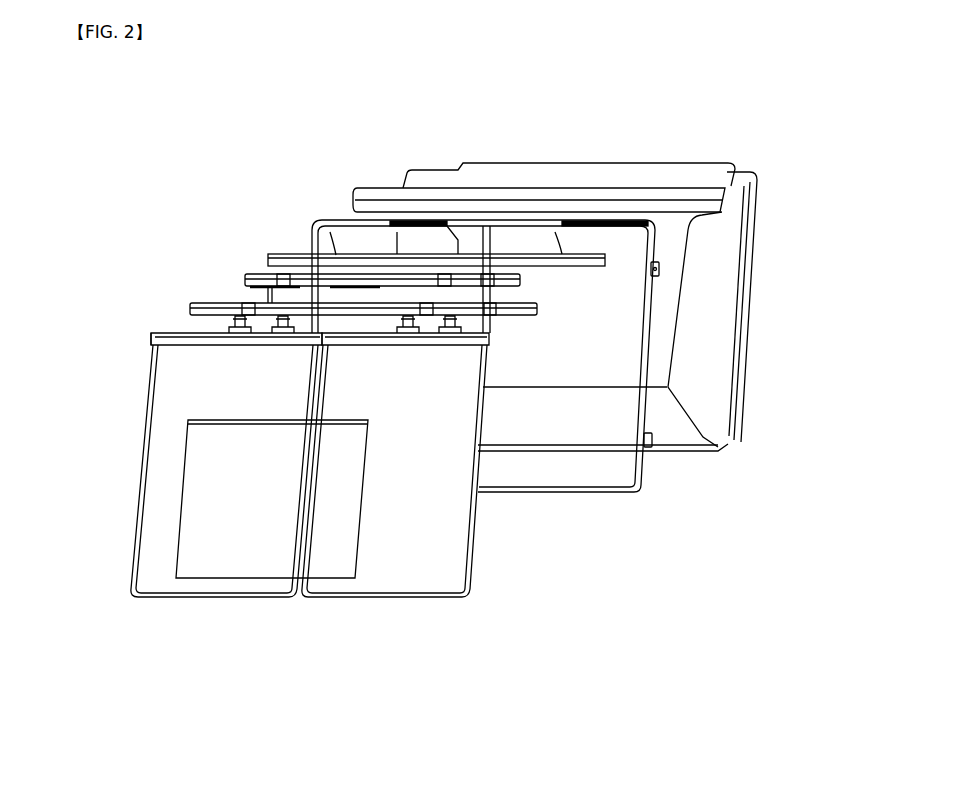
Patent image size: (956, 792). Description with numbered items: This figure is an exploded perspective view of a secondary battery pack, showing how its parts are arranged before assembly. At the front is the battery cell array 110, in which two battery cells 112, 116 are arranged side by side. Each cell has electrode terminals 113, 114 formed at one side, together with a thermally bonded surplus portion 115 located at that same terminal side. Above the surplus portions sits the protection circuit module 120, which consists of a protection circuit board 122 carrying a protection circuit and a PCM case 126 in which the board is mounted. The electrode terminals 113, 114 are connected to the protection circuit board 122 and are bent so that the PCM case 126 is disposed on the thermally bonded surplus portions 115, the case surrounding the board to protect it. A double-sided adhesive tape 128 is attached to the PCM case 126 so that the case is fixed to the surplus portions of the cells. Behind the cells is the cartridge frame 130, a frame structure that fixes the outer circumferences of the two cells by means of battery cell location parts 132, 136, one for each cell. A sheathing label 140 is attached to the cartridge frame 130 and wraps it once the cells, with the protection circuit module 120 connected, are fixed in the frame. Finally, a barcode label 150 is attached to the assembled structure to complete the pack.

The battery cell array 110 is at (277, 528).
The battery cell 112 is at (193, 502).
The electrode terminal 113 is at (238, 322).
The electrode terminal 114 is at (270, 308).
The thermally bonded surplus portion 115 is at (160, 340).
The battery cell 116 is at (347, 584).
The protection circuit module 120 is at (301, 229).
The protection circuit board 122 is at (328, 288).
The PCM case 126 is at (283, 302).
The double-sided adhesive tape 128 is at (296, 256).
The cartridge frame 130 is at (514, 349).
The battery cell location part 132 is at (340, 243).
The battery cell location part 136 is at (550, 473).
The sheathing label 140 is at (727, 439).
The barcode label 150 is at (200, 565).